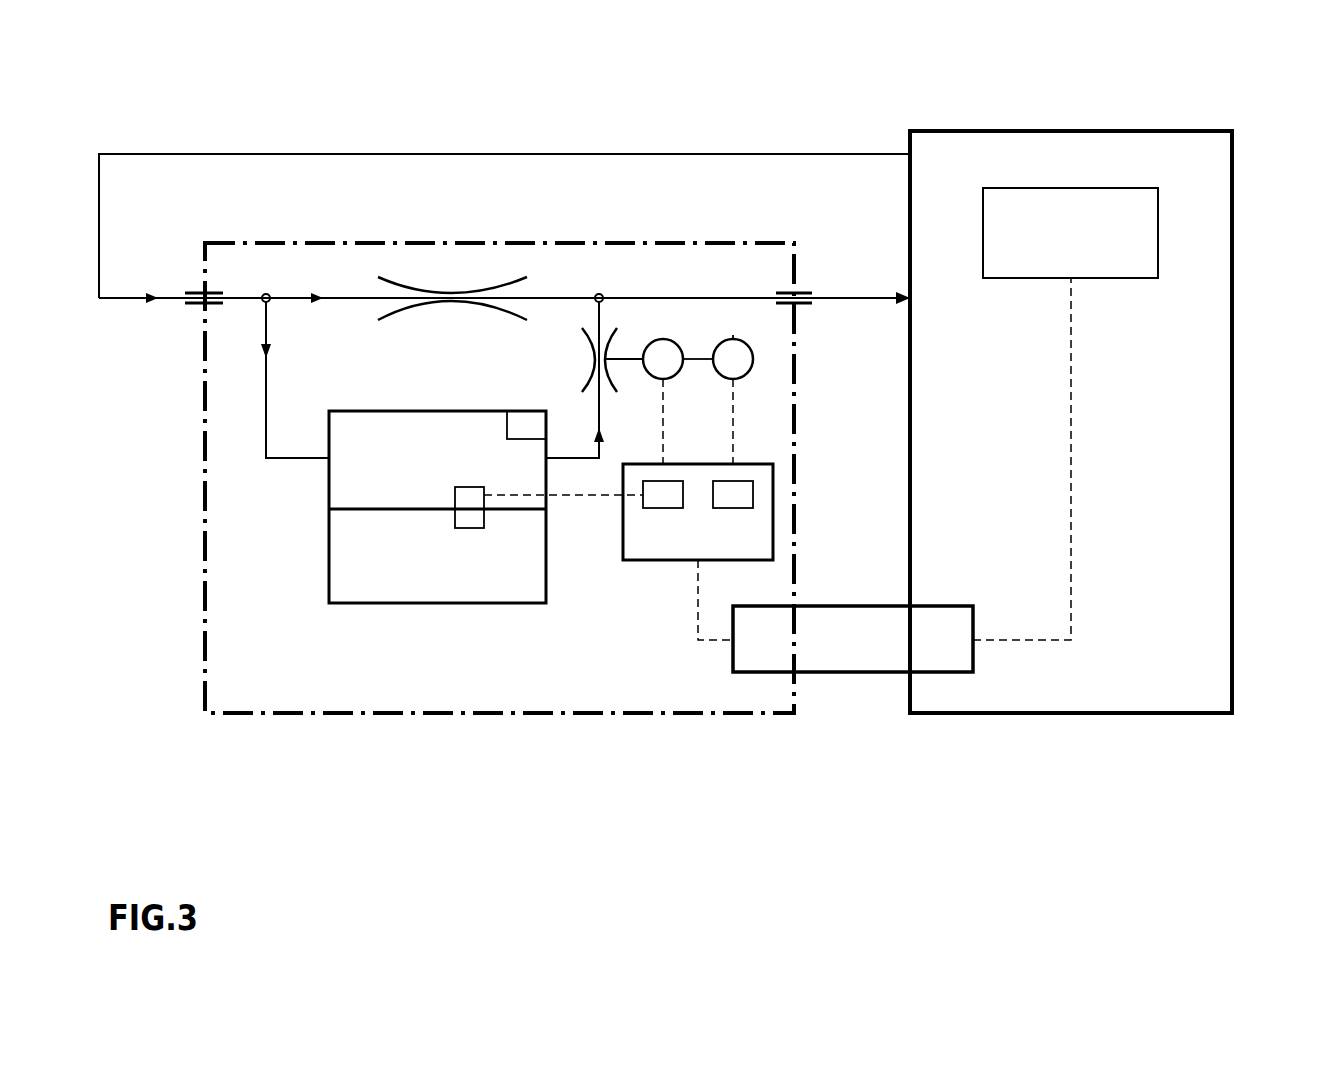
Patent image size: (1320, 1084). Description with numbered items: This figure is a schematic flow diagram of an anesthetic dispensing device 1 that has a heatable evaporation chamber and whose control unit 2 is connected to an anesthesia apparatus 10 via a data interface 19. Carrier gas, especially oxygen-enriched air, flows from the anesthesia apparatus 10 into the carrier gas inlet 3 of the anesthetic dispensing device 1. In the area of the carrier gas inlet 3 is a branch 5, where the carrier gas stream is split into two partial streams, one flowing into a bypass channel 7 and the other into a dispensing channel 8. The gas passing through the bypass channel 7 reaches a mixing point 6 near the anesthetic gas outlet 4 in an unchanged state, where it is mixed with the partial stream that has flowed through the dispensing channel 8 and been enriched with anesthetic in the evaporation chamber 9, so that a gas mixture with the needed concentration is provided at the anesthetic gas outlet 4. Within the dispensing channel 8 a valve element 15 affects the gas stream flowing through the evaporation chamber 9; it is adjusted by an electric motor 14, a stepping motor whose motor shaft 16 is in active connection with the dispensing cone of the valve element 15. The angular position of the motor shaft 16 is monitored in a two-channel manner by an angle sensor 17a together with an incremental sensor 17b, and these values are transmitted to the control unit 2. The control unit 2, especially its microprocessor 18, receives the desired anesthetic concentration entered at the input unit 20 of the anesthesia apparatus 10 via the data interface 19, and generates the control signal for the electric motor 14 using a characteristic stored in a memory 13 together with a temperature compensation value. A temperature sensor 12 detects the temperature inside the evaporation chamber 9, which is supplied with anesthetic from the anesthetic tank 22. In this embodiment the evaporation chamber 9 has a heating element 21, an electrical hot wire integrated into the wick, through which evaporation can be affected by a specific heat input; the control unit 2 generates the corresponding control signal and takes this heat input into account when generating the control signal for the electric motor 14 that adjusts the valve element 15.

The anesthetic dispensing device 1 is at (629, 737).
The control unit 2 is at (675, 545).
The carrier gas inlet 3 is at (207, 295).
The anesthetic gas outlet 4 is at (840, 297).
The branch 5 is at (266, 290).
The mixing point 6 is at (599, 292).
The bypass channel 7 is at (398, 291).
The dispensing channel 8 is at (267, 412).
The evaporation chamber 9 is at (348, 483).
The anesthesia apparatus 10 is at (1042, 690).
The temperature sensor 12 is at (518, 410).
The memory 13 is at (660, 500).
The electric motor 14 is at (664, 345).
The valve element 15 is at (593, 345).
The motor shaft 16 is at (633, 358).
The angle sensor 17a is at (753, 360).
The incremental sensor 17b is at (697, 357).
The microprocessor 18 is at (748, 493).
The data interface 19 is at (847, 657).
The input unit of the anesthesia apparatus 20 is at (1135, 236).
The heating element 21 is at (470, 518).
The anesthetic tank 22 is at (348, 539).